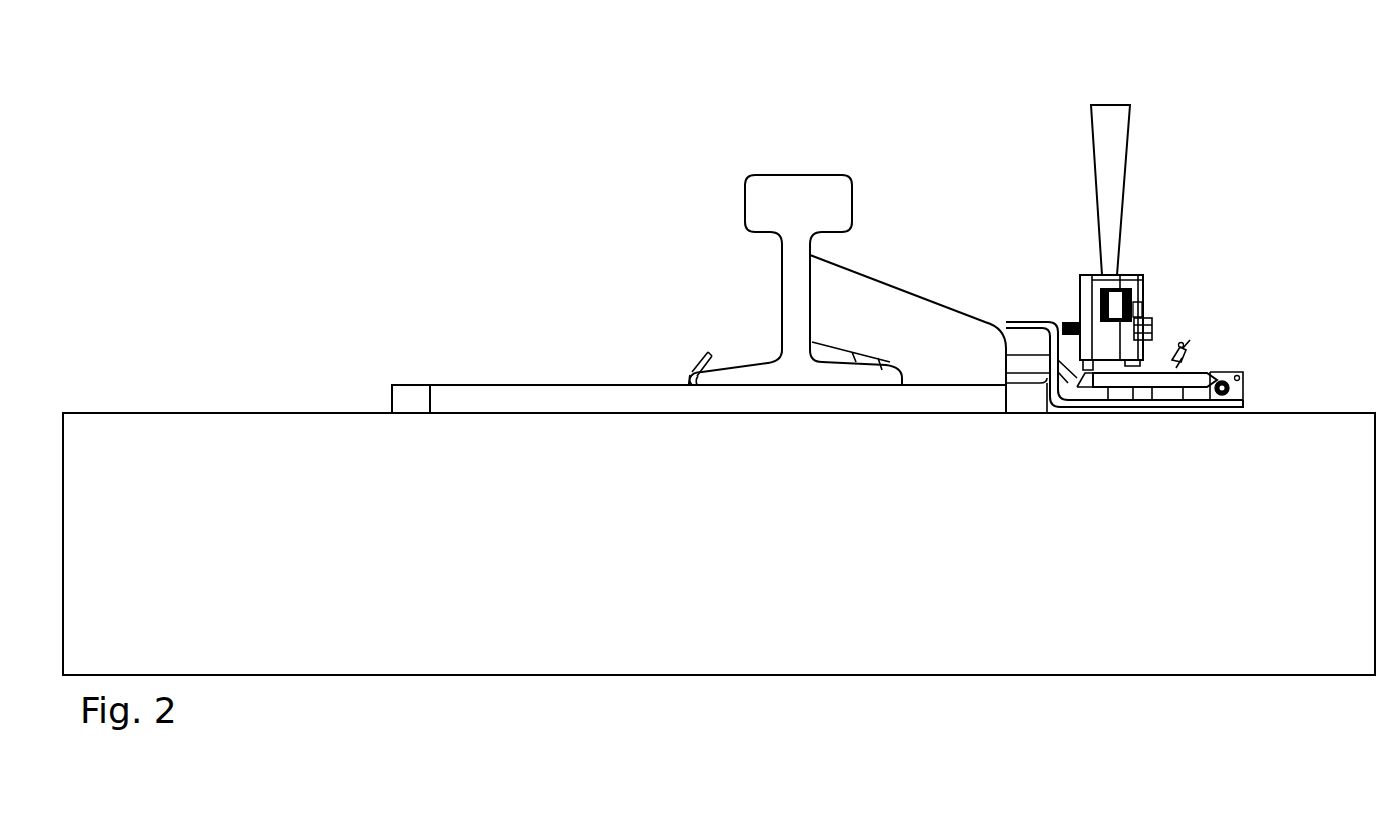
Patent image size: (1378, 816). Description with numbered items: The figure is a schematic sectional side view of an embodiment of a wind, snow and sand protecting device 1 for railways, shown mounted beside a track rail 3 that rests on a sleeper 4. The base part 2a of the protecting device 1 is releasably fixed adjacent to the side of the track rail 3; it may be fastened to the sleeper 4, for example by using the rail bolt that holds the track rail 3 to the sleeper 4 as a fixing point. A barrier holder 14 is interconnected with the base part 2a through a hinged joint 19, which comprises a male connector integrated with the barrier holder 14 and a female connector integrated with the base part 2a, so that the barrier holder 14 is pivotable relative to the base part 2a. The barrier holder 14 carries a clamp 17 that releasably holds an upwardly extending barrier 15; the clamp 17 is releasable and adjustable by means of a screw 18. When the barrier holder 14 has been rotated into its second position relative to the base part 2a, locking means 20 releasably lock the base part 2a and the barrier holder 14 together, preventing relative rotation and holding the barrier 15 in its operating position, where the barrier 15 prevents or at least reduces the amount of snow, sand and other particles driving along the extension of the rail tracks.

The protecting device 1 is at (1252, 288).
The base part 2a is at (1072, 405).
The track rail 3 is at (770, 200).
The sleeper 4 is at (1128, 602).
The barrier holder 14 is at (1150, 373).
The barrier 15 is at (1117, 123).
The clamp 17 is at (1123, 282).
The screw 18 is at (1152, 328).
The hinged joint 19 is at (1245, 390).
The locking means 20 is at (1183, 350).